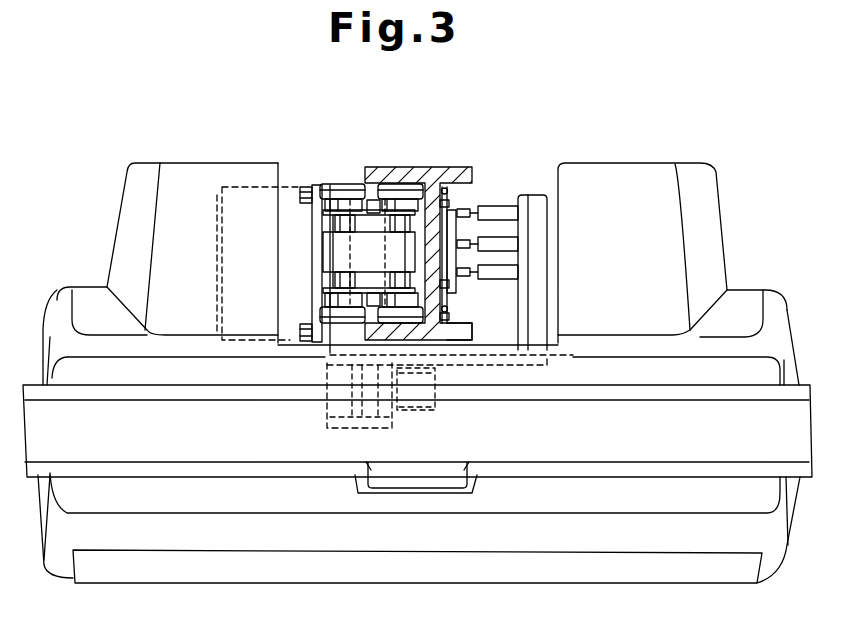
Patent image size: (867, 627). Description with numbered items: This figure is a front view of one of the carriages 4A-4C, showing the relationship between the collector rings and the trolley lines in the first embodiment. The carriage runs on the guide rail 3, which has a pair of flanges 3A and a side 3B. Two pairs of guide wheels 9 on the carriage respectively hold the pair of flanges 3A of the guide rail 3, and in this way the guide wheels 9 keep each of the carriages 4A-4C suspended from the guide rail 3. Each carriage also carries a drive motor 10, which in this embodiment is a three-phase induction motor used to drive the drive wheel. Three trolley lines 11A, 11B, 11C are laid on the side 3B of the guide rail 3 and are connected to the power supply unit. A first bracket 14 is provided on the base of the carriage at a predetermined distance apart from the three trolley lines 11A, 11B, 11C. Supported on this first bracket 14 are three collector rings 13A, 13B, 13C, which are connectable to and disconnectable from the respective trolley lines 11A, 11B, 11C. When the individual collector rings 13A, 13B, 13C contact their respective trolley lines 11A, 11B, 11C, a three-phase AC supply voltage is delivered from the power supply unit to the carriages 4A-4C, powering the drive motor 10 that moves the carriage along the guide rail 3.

The guide rail 3 is at (413, 172).
The flanges 3A is at (366, 185).
The side 3B is at (460, 325).
The guide wheels 9 is at (342, 184).
The drive motor 10 is at (298, 194).
The trolley line 11A is at (449, 190).
The trolley line 11B is at (456, 212).
The trolley line 11C is at (447, 286).
The collector ring 13A is at (519, 214).
The collector ring 13B is at (519, 244).
The collector ring 13C is at (519, 272).
The first bracket 14 is at (529, 314).
The carriages 4A-4C is at (758, 191).